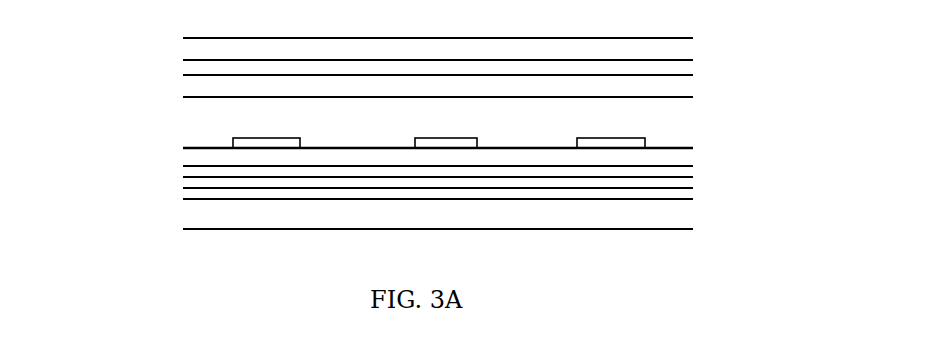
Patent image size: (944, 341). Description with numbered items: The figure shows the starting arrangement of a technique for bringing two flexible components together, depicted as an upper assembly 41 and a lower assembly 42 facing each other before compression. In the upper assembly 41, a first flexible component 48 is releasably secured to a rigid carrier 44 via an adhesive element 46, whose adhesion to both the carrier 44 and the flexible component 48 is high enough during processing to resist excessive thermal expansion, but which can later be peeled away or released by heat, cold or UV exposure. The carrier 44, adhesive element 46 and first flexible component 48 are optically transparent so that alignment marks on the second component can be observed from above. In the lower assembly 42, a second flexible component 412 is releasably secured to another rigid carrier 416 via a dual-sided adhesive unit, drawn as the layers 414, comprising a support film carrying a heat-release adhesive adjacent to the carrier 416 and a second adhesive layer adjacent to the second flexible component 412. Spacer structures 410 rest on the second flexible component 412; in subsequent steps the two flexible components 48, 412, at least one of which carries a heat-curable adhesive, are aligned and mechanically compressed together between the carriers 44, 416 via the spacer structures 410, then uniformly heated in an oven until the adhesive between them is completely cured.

The first stacked layer structure 41 is at (445, 56).
The second stacked layer structure 42 is at (437, 186).
The rigid carrier 44 is at (185, 50).
The adhesive element 46 is at (188, 68).
The first flexible component 48 is at (188, 83).
The spacer structures 410 is at (233, 142).
The second flexible component 412 is at (183, 157).
The dual-sided adhesive unit layers 414 is at (180, 165).
The rigid carrier 416 is at (192, 212).